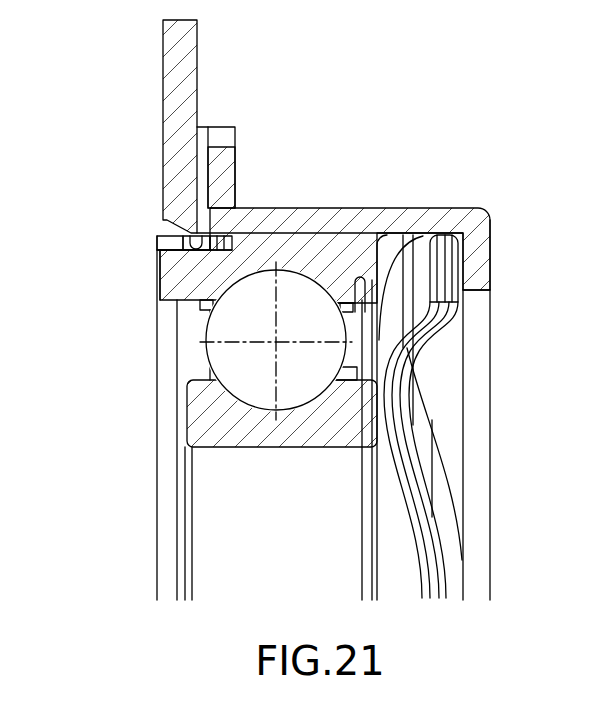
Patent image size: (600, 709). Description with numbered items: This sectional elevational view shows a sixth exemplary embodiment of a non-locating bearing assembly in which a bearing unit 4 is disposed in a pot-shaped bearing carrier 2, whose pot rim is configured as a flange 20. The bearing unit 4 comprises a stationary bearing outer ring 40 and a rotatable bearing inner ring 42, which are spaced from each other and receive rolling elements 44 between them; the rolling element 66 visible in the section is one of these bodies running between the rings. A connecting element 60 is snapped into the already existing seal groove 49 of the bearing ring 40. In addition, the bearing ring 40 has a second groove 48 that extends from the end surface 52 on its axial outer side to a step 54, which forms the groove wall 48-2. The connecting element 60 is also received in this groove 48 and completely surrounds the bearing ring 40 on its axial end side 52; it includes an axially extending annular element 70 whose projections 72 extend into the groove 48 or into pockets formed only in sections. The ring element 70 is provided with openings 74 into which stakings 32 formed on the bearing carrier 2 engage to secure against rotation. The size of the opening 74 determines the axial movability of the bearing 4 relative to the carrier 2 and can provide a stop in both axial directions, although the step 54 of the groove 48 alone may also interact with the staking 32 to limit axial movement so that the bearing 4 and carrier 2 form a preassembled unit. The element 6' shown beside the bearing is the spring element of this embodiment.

The bearing carrier 2 is at (120, 47).
The flange 20 is at (185, 35).
The bearing unit 4 is at (266, 476).
The bearing outer ring 40 is at (362, 253).
The bearing inner ring 42 is at (234, 431).
The rolling elements 44 is at (294, 383).
The ball 66 is at (216, 305).
The groove 48 is at (203, 277).
The groove wall 48-2 is at (232, 250).
The seal groove 49 is at (176, 270).
The end surface 52 is at (167, 284).
The step 54 is at (215, 248).
The connecting element 60 is at (165, 261).
The axially extending annular element 70 is at (160, 242).
The projections 72 is at (213, 228).
The openings 74 is at (203, 240).
The stakings 32 is at (196, 236).
The flat cable 6' is at (455, 417).